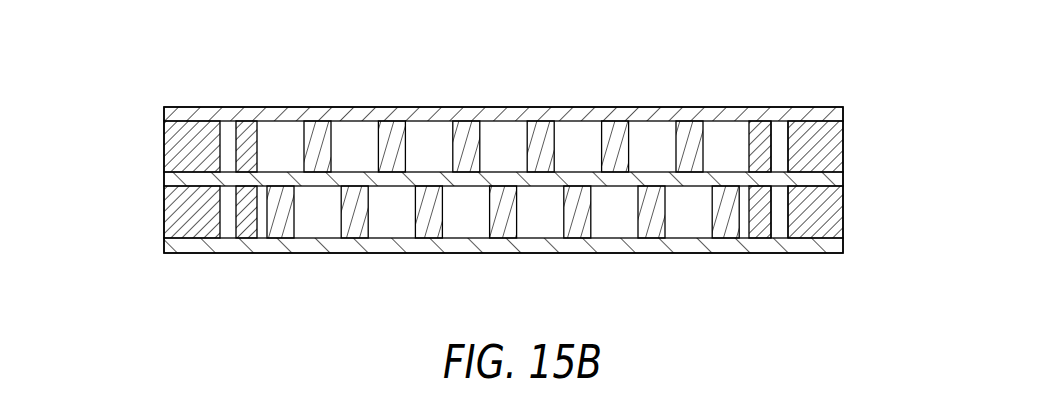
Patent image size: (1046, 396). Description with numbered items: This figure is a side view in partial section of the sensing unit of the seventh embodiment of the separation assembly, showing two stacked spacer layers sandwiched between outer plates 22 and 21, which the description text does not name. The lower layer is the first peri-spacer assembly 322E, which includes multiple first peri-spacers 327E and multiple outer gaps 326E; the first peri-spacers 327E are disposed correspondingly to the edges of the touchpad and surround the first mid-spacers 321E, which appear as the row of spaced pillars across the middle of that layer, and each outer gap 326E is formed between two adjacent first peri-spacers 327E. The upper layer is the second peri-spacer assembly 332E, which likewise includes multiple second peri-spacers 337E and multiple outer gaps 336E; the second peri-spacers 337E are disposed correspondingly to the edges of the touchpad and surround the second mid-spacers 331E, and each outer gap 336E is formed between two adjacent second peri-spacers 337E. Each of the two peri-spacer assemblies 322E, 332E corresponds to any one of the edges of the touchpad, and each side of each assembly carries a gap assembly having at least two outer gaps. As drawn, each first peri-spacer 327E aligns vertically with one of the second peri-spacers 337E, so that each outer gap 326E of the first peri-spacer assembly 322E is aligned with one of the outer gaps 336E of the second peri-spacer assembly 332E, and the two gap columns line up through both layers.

The second substrate 22 is at (415, 107).
The first substrate 21 is at (332, 253).
The second peri-spacer assembly 332E is at (154, 148).
The second mid-spacers 331E is at (685, 135).
The second peri-spacers 337E is at (759, 135).
The outer gaps 336E is at (778, 132).
The first peri-spacer assembly 322E is at (154, 211).
The first mid-spacers 321E is at (717, 207).
The first peri-spacers 327E is at (757, 238).
The outer gaps 326E is at (783, 253).